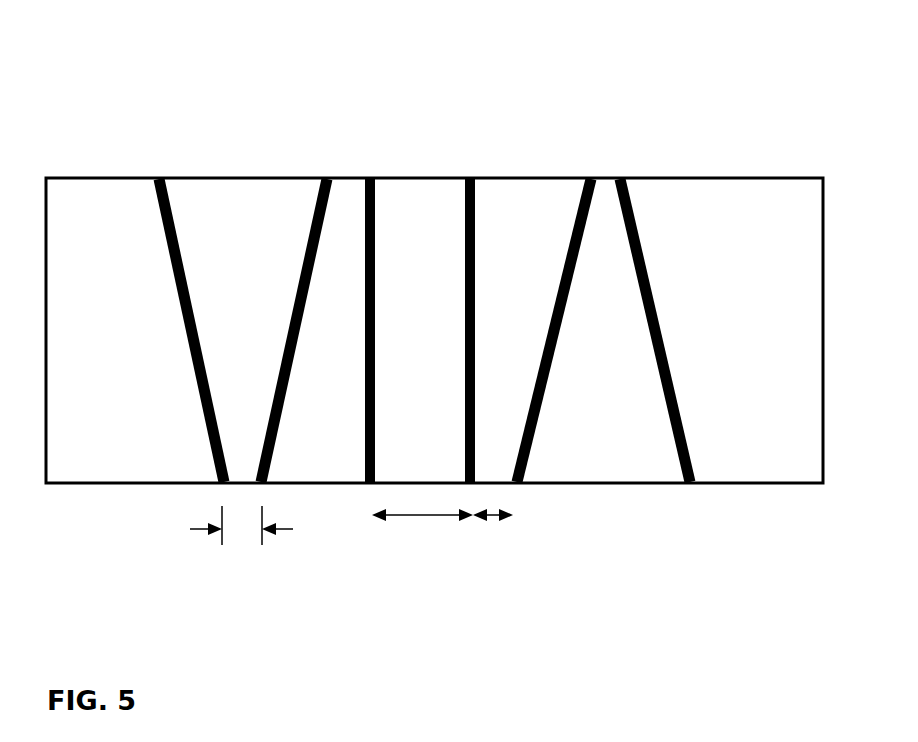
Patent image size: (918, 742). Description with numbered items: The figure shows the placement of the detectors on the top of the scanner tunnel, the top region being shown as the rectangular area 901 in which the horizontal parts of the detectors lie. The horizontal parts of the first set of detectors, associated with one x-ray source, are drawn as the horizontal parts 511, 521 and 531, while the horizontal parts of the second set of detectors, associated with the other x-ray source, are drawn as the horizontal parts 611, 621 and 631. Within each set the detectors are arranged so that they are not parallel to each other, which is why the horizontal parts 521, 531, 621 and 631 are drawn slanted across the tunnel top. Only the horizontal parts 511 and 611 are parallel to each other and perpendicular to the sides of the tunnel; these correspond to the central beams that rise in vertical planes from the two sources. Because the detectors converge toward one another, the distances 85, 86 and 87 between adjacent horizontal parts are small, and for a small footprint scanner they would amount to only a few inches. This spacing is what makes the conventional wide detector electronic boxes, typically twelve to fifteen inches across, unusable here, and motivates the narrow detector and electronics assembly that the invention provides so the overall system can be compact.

The substrate 901 is at (78, 217).
The horizontal part of detector 521 is at (173, 200).
The horizontal part of detector 621 is at (307, 208).
The horizontal part of detector 511 is at (392, 220).
The horizontal part of detector 611 is at (458, 208).
The horizontal part of detector 531 is at (570, 202).
The horizontal part of detector 631 is at (655, 222).
The distance 85 is at (247, 543).
The distance 86 is at (428, 522).
The distance 87 is at (490, 530).